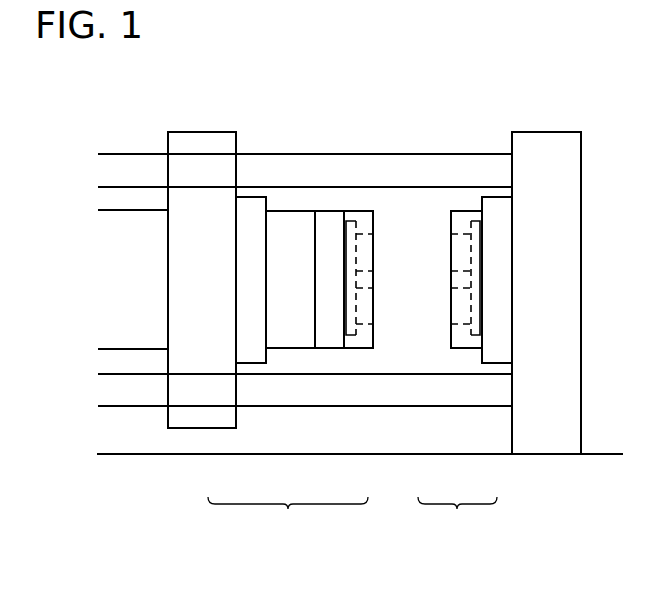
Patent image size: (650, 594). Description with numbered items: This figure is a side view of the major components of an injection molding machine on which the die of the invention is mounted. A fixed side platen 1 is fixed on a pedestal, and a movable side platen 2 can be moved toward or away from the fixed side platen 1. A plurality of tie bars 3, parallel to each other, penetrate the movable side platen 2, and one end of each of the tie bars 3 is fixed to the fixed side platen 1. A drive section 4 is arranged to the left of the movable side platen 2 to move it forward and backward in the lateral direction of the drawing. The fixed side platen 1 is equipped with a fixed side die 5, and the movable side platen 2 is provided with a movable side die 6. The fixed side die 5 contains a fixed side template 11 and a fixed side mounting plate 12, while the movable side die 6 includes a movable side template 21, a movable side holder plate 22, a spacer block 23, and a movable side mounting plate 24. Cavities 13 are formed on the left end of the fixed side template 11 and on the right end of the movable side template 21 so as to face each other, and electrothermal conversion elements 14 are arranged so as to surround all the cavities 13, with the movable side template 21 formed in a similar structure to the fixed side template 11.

The fixed side platen 1 is at (546, 140).
The movable side platen 2 is at (203, 140).
The tie bars 3 is at (278, 165).
The drive section 4 is at (137, 222).
The fixed side die 5 is at (457, 515).
The movable side die 6 is at (288, 515).
The fixed side template 11 is at (458, 340).
The fixed side mounting plate 12 is at (497, 352).
The cavities 13 is at (370, 246).
The electrothermal conversion elements 14 is at (353, 221).
The movable side template 21 is at (365, 336).
The movable side holder plate 22 is at (329, 336).
The spacer block 23 is at (288, 360).
The movable side mounting plate 24 is at (250, 347).